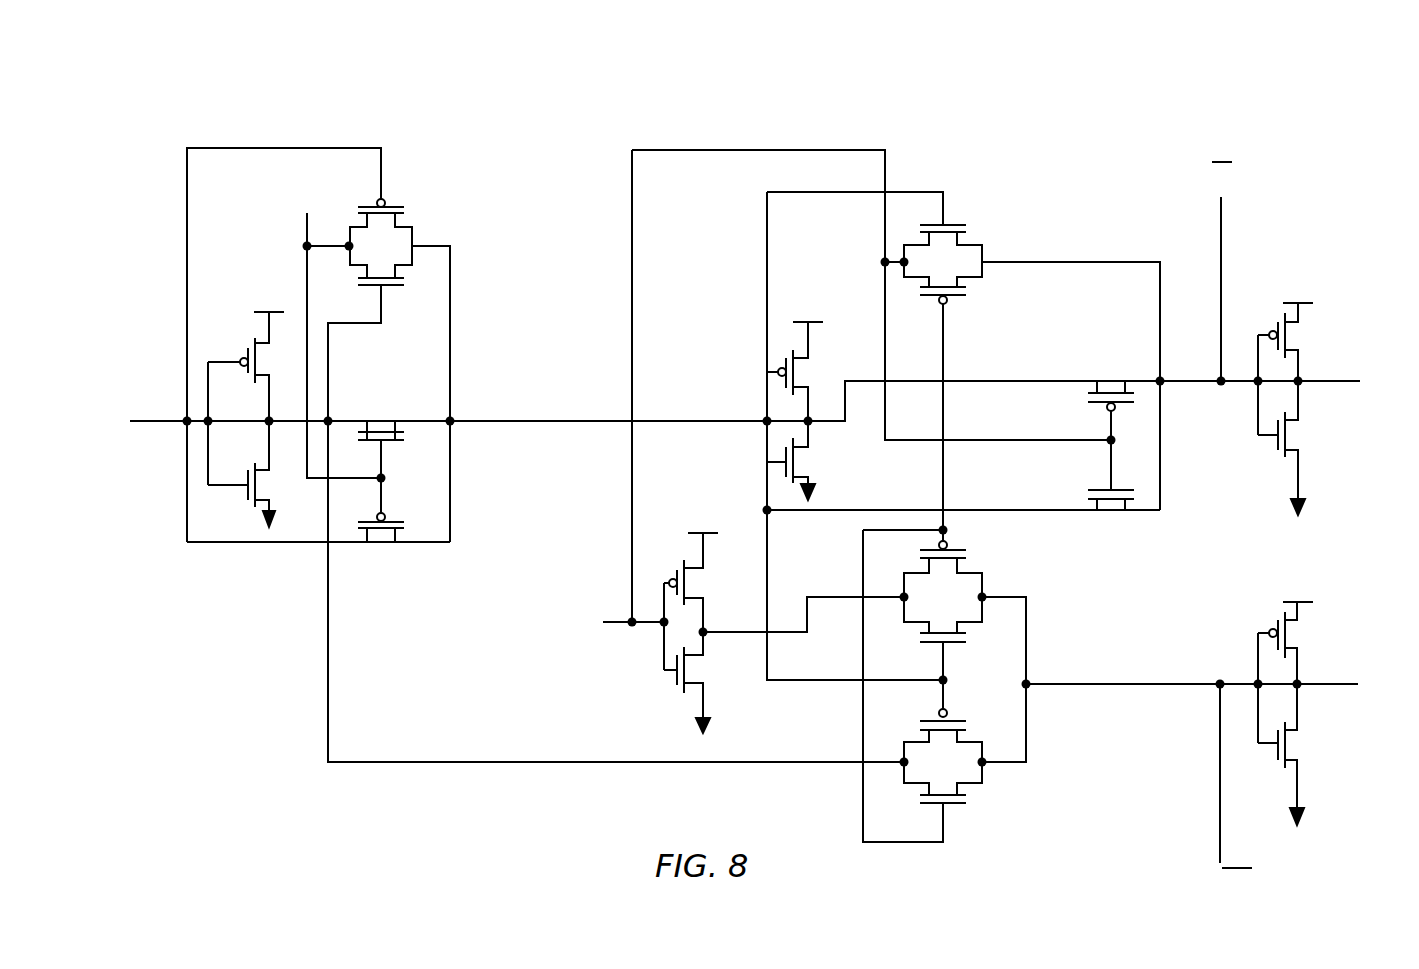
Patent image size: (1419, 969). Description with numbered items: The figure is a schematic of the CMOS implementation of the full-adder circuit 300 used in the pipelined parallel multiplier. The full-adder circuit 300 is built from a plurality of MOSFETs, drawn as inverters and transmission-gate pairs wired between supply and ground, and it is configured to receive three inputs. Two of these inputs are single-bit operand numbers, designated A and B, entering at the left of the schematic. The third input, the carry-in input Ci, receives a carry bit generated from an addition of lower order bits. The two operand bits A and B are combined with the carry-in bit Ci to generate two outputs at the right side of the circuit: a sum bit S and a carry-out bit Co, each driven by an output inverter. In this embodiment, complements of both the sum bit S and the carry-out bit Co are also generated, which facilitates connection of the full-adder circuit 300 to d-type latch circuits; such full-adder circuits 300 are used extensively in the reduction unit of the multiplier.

The full-adder circuit 300 is at (749, 479).
The input A is at (460, 428).
The input B is at (341, 331).
The carry-in input Ci is at (623, 620).
The sum bit S is at (1295, 278).
The carry-out bit Co is at (1303, 793).